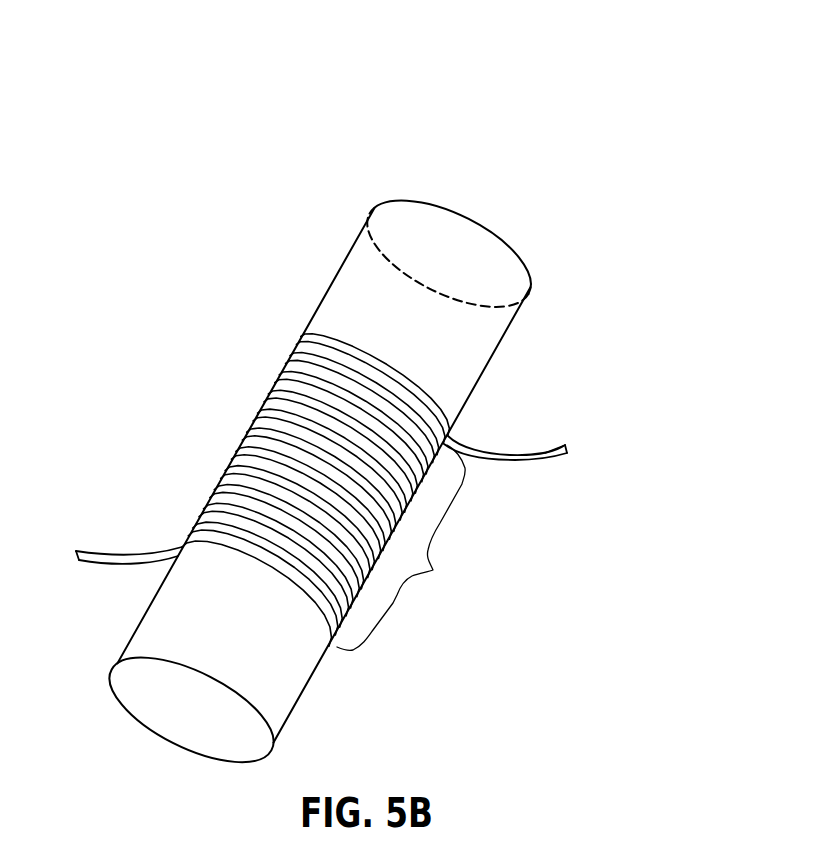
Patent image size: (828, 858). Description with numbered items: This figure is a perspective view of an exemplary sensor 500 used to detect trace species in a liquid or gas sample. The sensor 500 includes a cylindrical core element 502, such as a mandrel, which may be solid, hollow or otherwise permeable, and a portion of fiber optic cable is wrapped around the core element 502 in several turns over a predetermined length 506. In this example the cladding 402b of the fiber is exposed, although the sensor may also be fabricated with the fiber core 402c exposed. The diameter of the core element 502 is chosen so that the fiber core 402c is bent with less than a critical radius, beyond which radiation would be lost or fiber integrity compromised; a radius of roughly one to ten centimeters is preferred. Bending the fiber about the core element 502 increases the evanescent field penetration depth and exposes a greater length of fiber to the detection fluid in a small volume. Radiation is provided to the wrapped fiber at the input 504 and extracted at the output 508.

The sensor 500 is at (382, 45).
The cylindrical core element 502 is at (472, 218).
The input 504 is at (528, 451).
The predetermined length 506 is at (433, 570).
The output 508 is at (110, 558).
The cladding 402b is at (560, 442).
The fiber core 402c is at (570, 446).